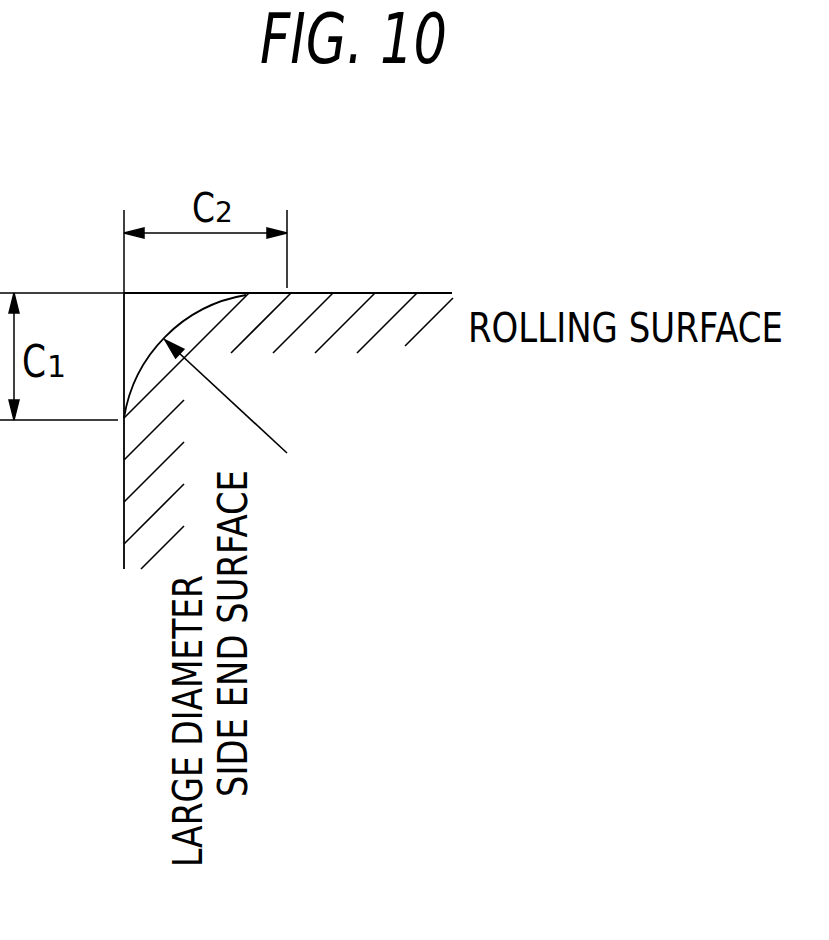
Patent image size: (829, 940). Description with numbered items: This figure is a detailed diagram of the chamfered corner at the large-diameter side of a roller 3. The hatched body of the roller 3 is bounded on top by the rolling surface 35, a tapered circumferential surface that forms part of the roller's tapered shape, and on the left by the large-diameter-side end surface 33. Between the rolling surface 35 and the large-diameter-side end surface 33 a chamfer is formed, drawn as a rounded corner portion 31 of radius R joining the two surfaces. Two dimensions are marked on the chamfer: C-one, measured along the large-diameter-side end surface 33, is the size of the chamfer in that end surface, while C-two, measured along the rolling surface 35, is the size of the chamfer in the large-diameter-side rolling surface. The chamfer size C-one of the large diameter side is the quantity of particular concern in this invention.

The roller 3 is at (352, 370).
The rounded corner portion 31 is at (186, 293).
The large-diameter-side end surface 33 is at (124, 508).
The rolling surface 35 is at (400, 293).